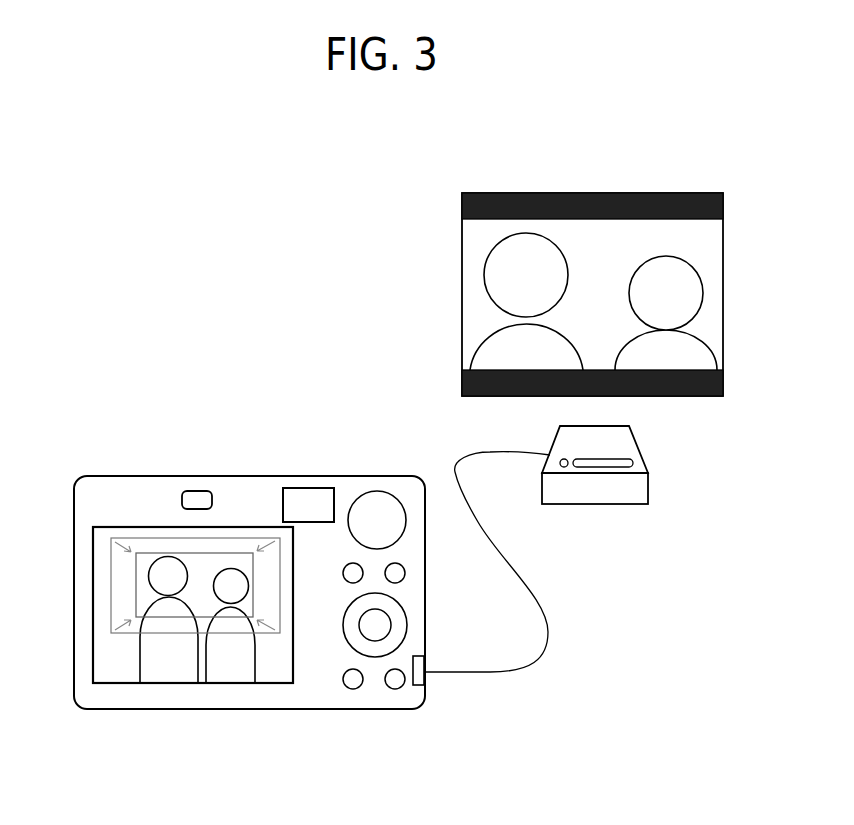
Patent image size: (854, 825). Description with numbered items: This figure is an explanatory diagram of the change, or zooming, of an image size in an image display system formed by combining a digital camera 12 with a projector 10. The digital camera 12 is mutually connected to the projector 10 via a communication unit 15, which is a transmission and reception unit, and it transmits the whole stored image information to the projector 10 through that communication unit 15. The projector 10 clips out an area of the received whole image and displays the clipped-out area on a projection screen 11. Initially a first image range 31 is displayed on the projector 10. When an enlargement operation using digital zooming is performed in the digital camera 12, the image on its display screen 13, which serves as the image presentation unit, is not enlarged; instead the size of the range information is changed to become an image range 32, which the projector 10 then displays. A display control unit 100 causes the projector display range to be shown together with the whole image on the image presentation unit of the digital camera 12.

The projector 10 is at (637, 442).
The projection screen 11 is at (723, 322).
The digital camera 12 is at (88, 711).
The display screen 13 is at (93, 633).
The communication unit 15 is at (425, 678).
The first image range 31 is at (111, 597).
The image range 32 is at (136, 570).
The display control unit 100 is at (307, 488).